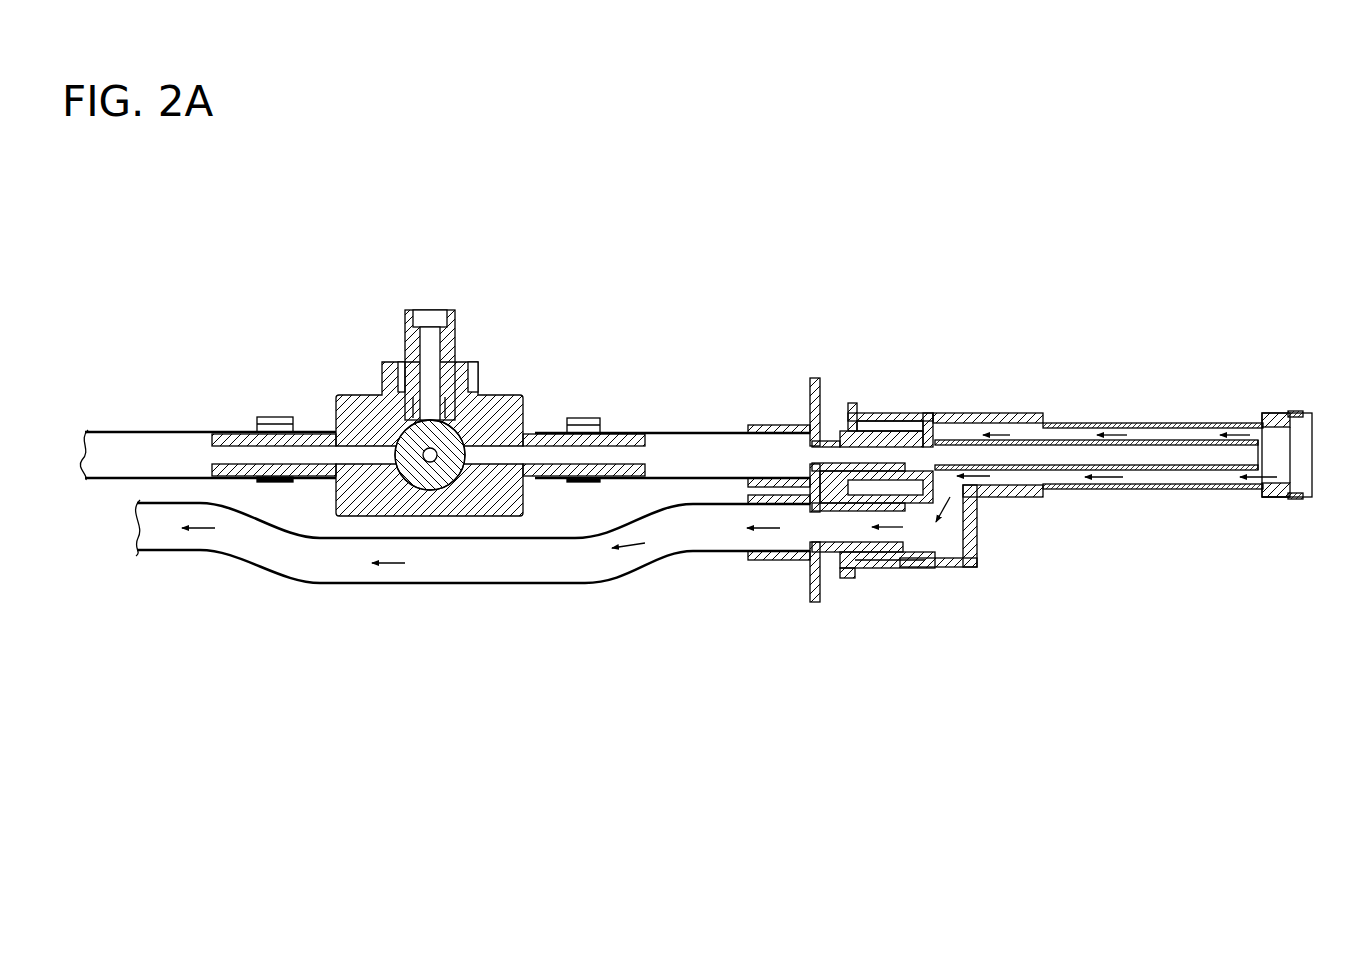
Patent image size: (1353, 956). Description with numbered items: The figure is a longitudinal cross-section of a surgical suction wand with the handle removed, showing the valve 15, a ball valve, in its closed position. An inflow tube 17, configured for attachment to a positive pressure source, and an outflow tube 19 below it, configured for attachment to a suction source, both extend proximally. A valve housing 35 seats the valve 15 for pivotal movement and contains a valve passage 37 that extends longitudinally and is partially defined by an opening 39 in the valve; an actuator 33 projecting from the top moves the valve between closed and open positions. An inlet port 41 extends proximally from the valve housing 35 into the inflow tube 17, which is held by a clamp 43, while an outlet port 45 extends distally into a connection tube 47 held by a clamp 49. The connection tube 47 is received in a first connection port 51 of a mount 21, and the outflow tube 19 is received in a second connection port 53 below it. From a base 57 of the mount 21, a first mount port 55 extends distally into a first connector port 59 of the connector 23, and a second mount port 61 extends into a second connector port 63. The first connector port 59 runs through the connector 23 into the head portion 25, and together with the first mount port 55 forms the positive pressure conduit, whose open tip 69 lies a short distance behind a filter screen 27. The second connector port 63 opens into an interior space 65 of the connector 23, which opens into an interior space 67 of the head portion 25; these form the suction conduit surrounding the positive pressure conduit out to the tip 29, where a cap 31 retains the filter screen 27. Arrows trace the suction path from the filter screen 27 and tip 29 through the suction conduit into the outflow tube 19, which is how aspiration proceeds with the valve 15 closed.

The valve 15 is at (403, 316).
The inflow tube 17 is at (118, 455).
The outflow tube 19 is at (315, 578).
The mount 21 is at (809, 377).
The connector 23 is at (981, 411).
The head portion 25 is at (1133, 421).
The filter screen 27 is at (1314, 455).
The tip 29 is at (1310, 500).
The cap 31 is at (1295, 500).
The actuator 33 is at (452, 325).
The valve housing 35 is at (490, 505).
The valve passage 37 is at (358, 453).
The opening 39 is at (434, 456).
The inlet port 41 is at (240, 440).
The clamp 43 is at (277, 418).
The outlet port 45 is at (620, 440).
The connection tube 47 is at (690, 430).
The clamp 49 is at (588, 418).
The first connection port 51 is at (765, 428).
The second connection port 53 is at (770, 557).
The first mount port 55 is at (870, 440).
The base 57 is at (815, 603).
The first connector port 59 is at (890, 440).
The second mount port 61 is at (830, 560).
The second connector port 63 is at (885, 560).
The interior space 65 is at (942, 532).
The interior space 67 is at (1290, 447).
The tip 69 is at (1262, 450).